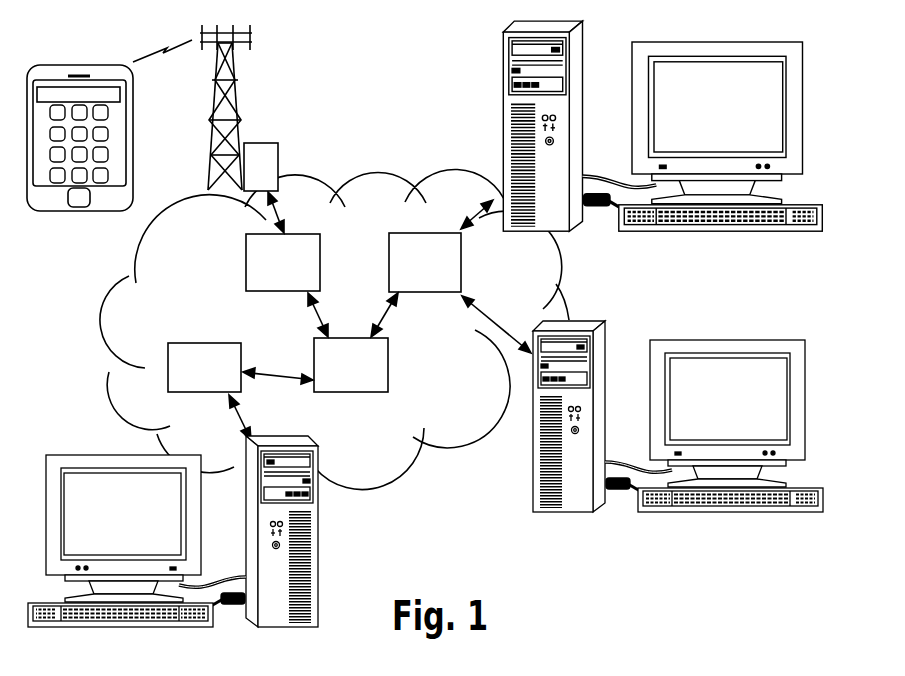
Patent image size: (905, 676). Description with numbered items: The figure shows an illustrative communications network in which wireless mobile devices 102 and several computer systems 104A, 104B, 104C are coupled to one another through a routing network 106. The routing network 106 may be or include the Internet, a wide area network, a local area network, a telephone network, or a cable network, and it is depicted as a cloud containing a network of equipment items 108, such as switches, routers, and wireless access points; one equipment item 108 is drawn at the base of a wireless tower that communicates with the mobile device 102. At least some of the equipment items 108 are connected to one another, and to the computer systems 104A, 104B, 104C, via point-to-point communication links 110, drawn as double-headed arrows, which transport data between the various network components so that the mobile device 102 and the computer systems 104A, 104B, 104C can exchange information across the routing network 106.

The wireless mobile device 102 is at (80, 152).
The computer system 104A is at (581, 65).
The computer system 104B is at (607, 365).
The computer system 104C is at (321, 585).
The routing network 106 is at (447, 397).
The equipment item 108 is at (282, 170).
The point-to-point communication link 110 is at (477, 221).